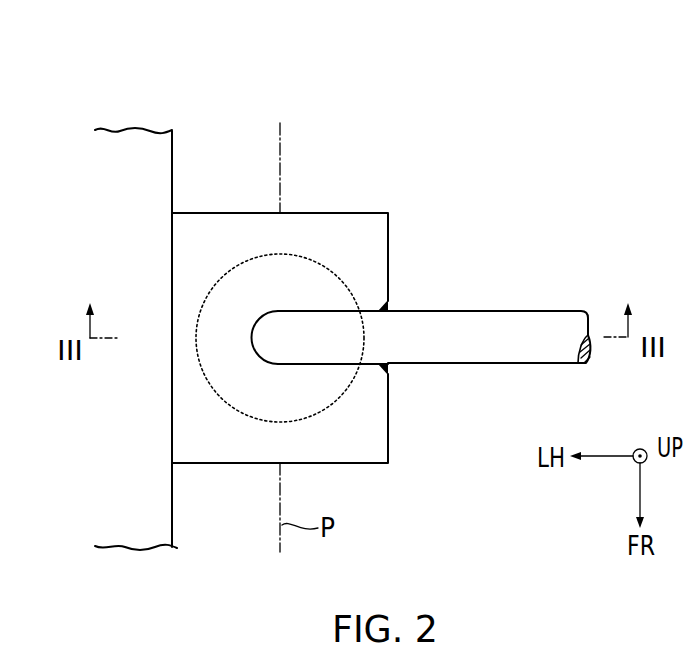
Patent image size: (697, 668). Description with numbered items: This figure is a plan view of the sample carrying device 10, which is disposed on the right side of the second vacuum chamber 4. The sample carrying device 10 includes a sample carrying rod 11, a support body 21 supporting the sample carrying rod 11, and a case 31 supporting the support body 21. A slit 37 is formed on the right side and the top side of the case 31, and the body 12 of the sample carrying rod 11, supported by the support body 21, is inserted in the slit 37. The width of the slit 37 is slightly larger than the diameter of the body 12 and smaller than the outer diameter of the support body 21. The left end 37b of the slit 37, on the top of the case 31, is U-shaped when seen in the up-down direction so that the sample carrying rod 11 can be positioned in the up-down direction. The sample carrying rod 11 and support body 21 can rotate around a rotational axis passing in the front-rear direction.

The second vacuum chamber 4 is at (132, 147).
The sample carrying device 10 is at (302, 286).
The case 31 is at (252, 226).
The slit 37 is at (282, 256).
The left end of the slit 37b is at (252, 337).
The support body 21 is at (343, 328).
The sample carrying rod 11 is at (490, 305).
The body 12 is at (527, 318).